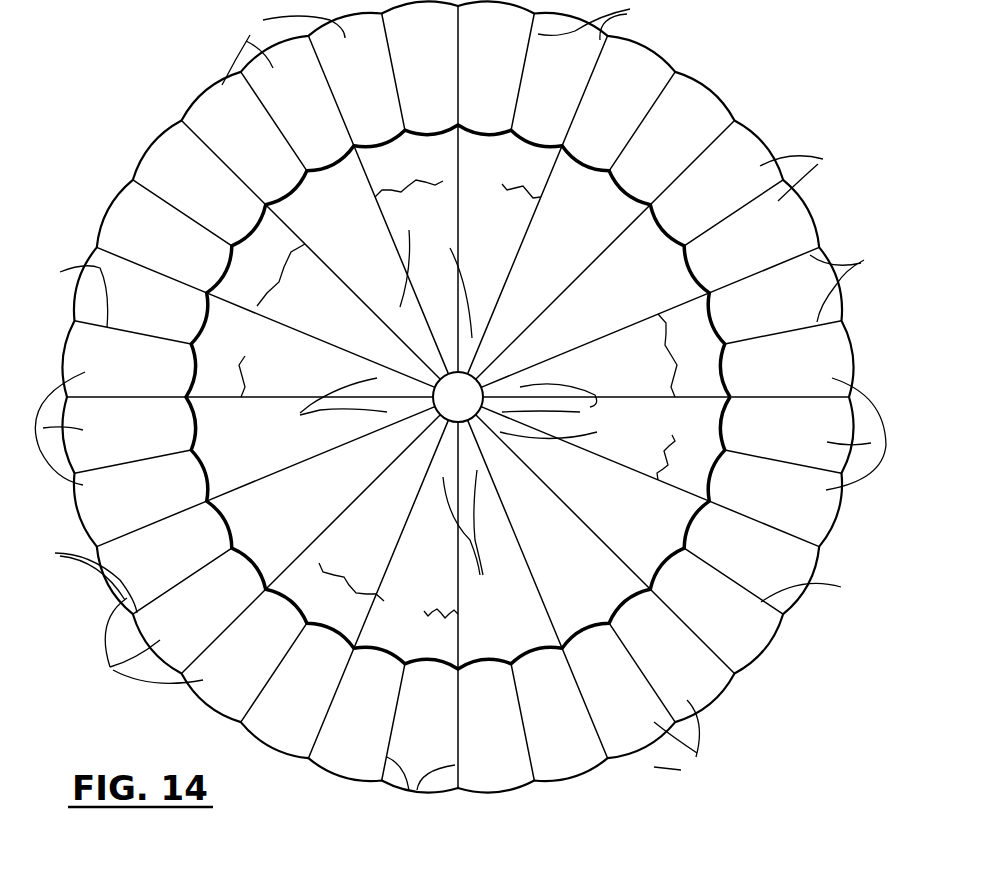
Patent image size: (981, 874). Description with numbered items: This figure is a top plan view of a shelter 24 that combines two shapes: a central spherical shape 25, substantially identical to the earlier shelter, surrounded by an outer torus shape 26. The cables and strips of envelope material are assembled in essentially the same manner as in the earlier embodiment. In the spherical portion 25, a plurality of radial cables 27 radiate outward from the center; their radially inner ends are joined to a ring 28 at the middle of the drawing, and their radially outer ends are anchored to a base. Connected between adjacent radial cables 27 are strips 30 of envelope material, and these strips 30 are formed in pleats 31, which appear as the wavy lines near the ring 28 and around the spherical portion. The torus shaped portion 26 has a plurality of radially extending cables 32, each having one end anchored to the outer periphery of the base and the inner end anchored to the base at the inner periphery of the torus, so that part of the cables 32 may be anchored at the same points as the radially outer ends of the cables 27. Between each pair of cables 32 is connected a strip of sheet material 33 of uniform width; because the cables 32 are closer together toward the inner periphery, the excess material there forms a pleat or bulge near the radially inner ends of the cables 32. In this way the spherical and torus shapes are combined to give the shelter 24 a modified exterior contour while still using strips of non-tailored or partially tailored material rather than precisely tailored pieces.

The shelter 24 is at (714, 79).
The spherical shape 25 is at (655, 285).
The torus shape 26 is at (130, 205).
The radial cables 27 is at (443, 181).
The ring 28 is at (445, 410).
The strips 30 is at (285, 235).
The pleats 31 is at (450, 248).
The radially extending cables 32 is at (60, 272).
The strip of sheet material 33 is at (454, 396).